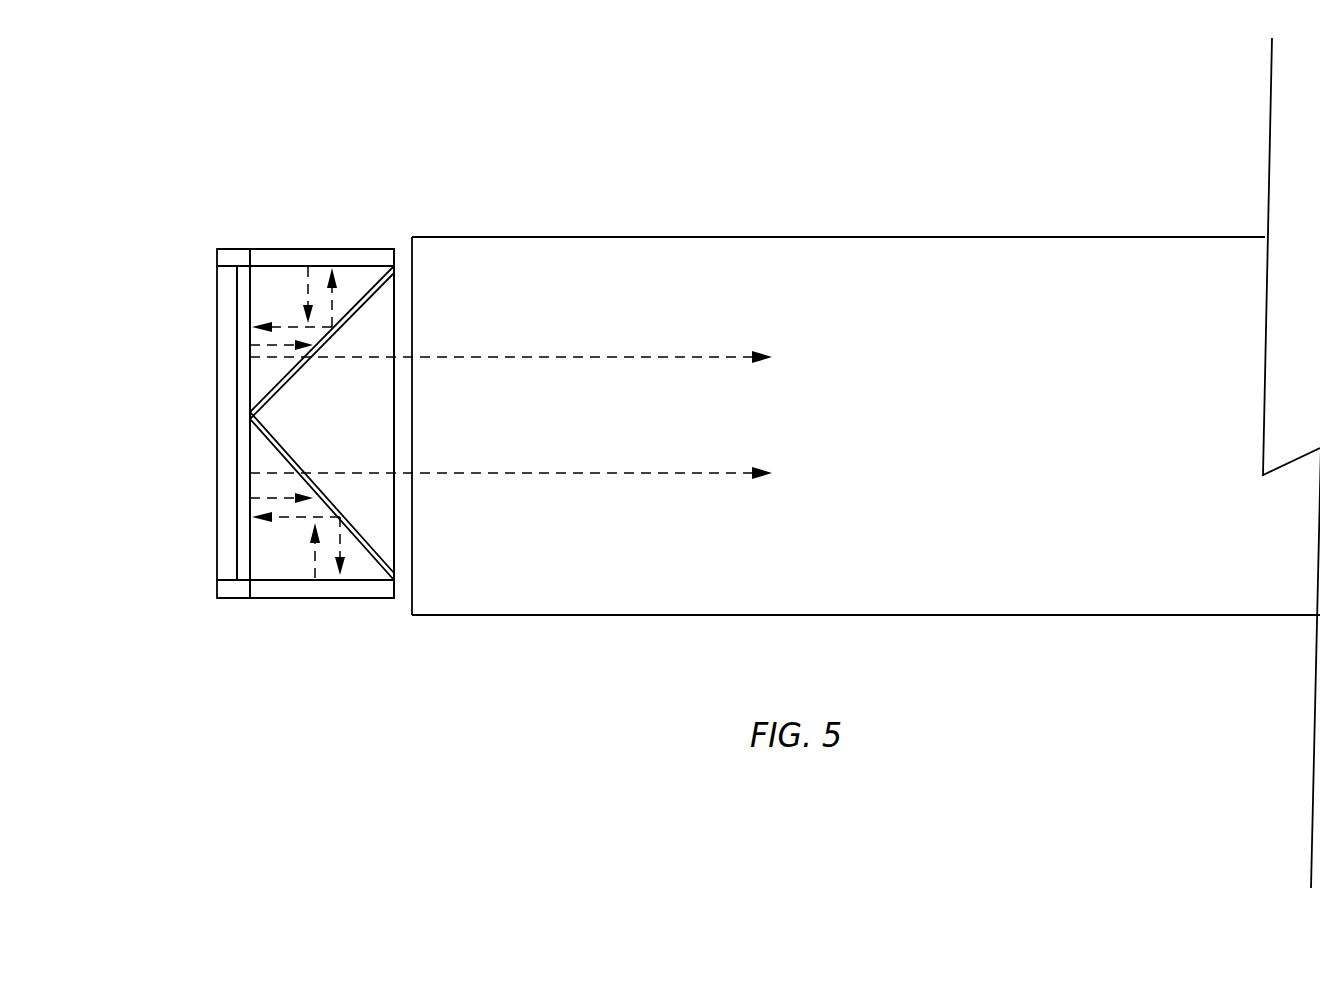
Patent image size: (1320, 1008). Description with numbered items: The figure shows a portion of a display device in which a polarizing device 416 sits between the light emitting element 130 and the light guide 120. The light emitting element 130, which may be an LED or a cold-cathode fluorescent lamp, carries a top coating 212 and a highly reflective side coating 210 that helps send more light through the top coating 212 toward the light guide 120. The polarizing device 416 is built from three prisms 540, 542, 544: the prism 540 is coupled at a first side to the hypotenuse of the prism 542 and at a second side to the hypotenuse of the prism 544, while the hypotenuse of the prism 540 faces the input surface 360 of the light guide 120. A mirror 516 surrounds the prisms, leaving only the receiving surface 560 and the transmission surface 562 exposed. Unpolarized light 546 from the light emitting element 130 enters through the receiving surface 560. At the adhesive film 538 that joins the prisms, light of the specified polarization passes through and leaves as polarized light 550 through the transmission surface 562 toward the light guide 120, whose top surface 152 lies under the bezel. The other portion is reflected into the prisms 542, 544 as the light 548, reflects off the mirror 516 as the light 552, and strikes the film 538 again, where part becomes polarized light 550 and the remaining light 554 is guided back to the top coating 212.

The polarizing device 416 is at (222, 220).
The side coating 210 is at (245, 258).
The top coating 212 is at (243, 413).
The light emitting element 130 is at (228, 457).
The mirror 516 is at (322, 263).
The film 538 is at (300, 362).
The prism 540 is at (397, 263).
The prism 542 is at (376, 303).
The prism 544 is at (380, 575).
The unpolarized light 546 is at (250, 344).
The light 548 is at (377, 302).
The polarized light 550 is at (332, 360).
The light 552 is at (308, 288).
The light 554 is at (300, 327).
The receiving surface 560 is at (250, 580).
The transmission surface 562 is at (395, 418).
The input surface 360 is at (412, 445).
The light guide 120 is at (627, 240).
The top surface 152 is at (1012, 417).